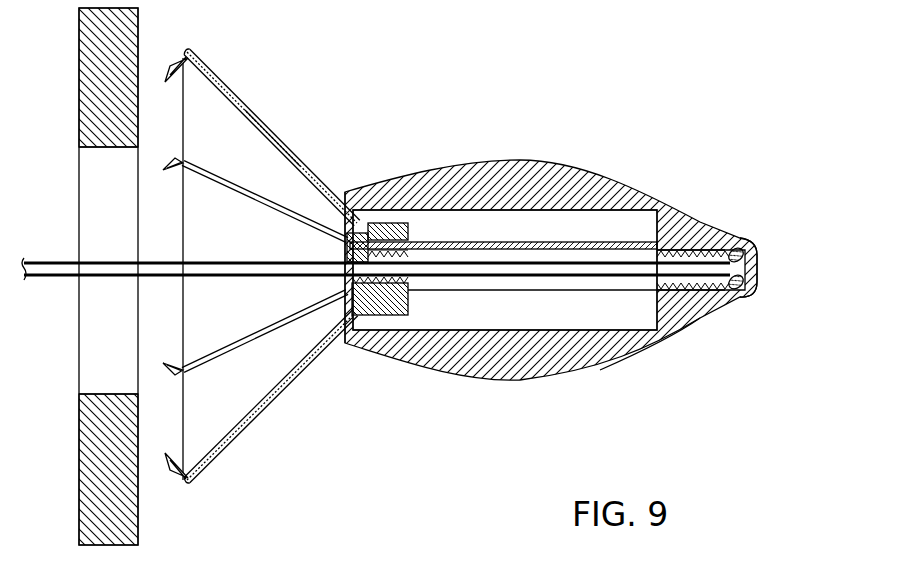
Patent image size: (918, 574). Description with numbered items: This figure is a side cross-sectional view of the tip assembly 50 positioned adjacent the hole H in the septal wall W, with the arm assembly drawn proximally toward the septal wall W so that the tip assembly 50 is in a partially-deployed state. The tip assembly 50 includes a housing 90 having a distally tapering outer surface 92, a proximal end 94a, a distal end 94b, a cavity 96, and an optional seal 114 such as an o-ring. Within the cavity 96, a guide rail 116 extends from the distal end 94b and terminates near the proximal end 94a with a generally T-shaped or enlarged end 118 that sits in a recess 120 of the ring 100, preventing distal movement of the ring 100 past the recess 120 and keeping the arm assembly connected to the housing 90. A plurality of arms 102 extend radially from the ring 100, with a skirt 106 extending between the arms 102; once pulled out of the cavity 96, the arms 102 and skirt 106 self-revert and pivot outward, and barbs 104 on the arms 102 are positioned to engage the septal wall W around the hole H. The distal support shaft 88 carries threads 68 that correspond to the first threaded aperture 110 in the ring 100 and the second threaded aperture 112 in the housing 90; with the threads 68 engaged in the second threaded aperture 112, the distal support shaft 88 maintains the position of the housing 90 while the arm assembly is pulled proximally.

The tip assembly 50 is at (684, 67).
The threads 68 is at (679, 249).
The distal support shaft 88 is at (44, 257).
The housing 90 is at (449, 381).
The distally tapering outer surface 92 is at (656, 352).
The proximal end 94a is at (343, 359).
The distal end 94b is at (745, 235).
The cavity 96 is at (591, 314).
The ring 100 is at (388, 264).
The arms 102 is at (228, 82).
The barb 104 is at (177, 60).
The skirt 106 is at (258, 164).
The first threaded aperture 110 is at (386, 287).
The second threaded aperture 112 is at (708, 293).
The seal 114 is at (758, 257).
The guide rail 116 is at (510, 243).
The end 118 is at (346, 232).
The recess 120 is at (396, 222).
The hole H is at (83, 322).
The septal wall W is at (76, 466).